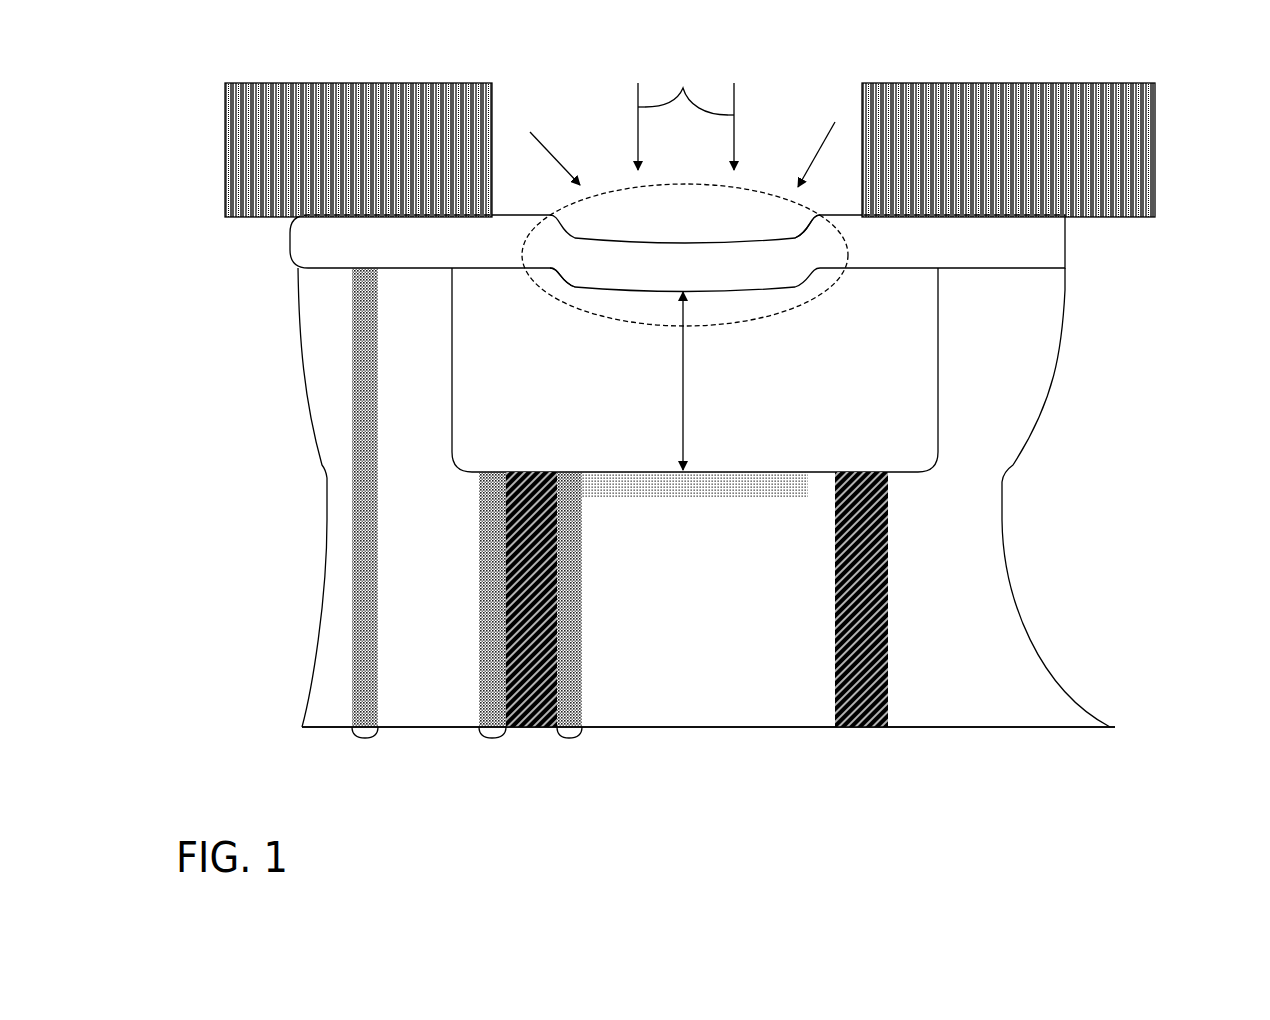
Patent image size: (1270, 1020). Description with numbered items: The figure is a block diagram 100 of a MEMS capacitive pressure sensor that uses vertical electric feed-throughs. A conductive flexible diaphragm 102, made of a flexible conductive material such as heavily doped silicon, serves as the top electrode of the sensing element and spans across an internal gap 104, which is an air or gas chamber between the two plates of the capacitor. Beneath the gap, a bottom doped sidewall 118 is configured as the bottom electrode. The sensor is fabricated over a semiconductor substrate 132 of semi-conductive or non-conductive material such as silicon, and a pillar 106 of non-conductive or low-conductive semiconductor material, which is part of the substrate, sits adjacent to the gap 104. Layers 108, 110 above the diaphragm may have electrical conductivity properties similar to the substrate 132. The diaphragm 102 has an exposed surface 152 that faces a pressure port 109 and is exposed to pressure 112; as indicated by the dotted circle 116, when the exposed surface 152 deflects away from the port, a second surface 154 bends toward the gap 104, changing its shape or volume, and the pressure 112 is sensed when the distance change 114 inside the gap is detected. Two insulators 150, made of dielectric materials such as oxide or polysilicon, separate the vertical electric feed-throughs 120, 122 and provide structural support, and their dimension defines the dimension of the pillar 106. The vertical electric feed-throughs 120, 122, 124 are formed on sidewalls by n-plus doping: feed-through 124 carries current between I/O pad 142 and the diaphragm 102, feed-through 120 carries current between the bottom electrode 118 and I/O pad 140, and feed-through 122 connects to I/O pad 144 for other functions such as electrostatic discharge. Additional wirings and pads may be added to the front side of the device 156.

The block diagram 100 is at (1222, 80).
The conductive flexible diaphragm 102 is at (966, 257).
The internal gap 104 is at (891, 374).
The pillar 106 is at (719, 614).
The layer 108 is at (970, 82).
The pressure port 109 is at (775, 78).
The layer 110 is at (430, 82).
The pressure 112 is at (686, 114).
The distance change 114 is at (680, 388).
The dotted circle 116 is at (545, 287).
The bottom doped sidewall 118 is at (730, 498).
The vertical electric feed-through 120 is at (580, 617).
The vertical electric feed-through 122 is at (482, 565).
The vertical electric feed-through 124 is at (378, 414).
The semiconductor substrate 132 is at (973, 590).
The I/O pad 140 is at (571, 740).
The I/O pad 142 is at (367, 739).
The I/O pad 144 is at (492, 739).
The insulator 150 is at (548, 623).
The exposed surface 152 is at (500, 215).
The second surface 154 is at (862, 270).
The device 156 is at (894, 775).